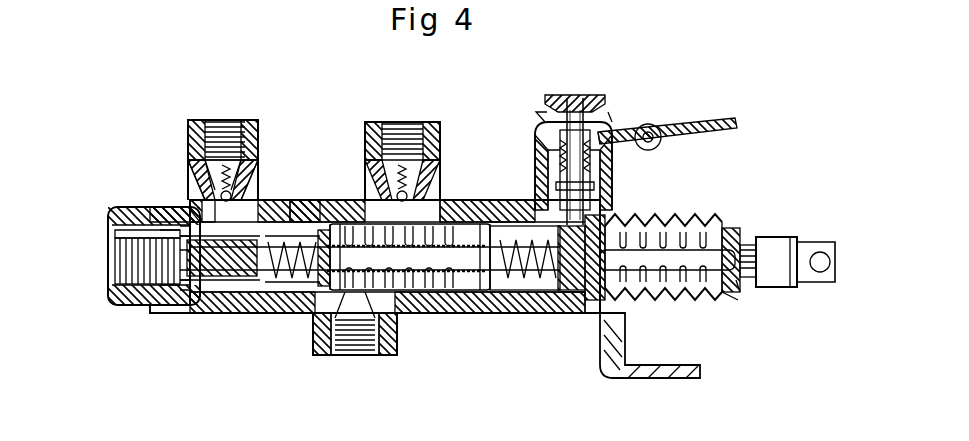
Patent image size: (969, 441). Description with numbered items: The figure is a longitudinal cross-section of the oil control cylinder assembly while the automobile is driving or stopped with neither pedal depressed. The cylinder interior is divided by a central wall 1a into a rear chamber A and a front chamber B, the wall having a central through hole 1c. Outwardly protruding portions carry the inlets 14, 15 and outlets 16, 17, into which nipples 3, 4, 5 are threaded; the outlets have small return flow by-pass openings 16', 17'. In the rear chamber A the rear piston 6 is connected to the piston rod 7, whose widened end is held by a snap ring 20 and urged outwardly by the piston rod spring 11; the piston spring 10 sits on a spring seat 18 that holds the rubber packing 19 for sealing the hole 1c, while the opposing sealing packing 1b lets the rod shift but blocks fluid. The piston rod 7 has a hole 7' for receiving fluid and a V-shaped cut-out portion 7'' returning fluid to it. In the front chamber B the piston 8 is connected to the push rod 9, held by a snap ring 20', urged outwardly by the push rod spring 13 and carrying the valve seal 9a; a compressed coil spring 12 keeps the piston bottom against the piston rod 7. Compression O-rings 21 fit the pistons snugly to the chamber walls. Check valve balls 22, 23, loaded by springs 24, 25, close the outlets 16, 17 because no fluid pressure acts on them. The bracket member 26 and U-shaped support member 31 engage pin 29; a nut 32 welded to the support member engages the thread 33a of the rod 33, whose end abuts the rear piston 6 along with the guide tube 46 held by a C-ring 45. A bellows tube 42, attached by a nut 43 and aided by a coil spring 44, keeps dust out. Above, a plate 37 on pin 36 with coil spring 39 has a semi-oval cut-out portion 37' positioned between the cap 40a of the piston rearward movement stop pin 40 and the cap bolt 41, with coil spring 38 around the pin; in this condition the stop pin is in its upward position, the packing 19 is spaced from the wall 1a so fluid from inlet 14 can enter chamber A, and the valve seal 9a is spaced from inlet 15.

The central wall 1a is at (360, 206).
The sealing packing 1b is at (322, 210).
The central through hole 1c is at (321, 355).
The nipple 3 is at (116, 209).
The nipple 4 is at (372, 128).
The nipple 5 is at (192, 126).
The rear piston 6 is at (556, 312).
The piston rod 7 is at (410, 291).
The hole 7' is at (517, 232).
The V-shaped cut-out portion 7'' is at (309, 298).
The piston 8 is at (296, 302).
The push rod 9 is at (195, 312).
The valve seal 9a is at (118, 240).
The piston spring 10 is at (470, 312).
The piston rod spring 11 is at (520, 300).
The coil spring 12 is at (223, 312).
The push rod spring 13 is at (258, 312).
The inlet 14 is at (363, 356).
The inlet 15 is at (138, 260).
The outlet 16 is at (447, 198).
The return flow by-pass opening 16' is at (298, 175).
The outlet 17 is at (166, 197).
The return flow by-pass opening 17' is at (162, 174).
The spring seat 18 is at (422, 312).
The rubber packing 19 is at (395, 330).
The snap ring 20 is at (484, 304).
The snap ring 20' is at (254, 145).
The compression O-rings 21 is at (302, 216).
The check valve ball 22 is at (378, 198).
The check valve ball 23 is at (200, 182).
The spring 24 is at (428, 182).
The spring 25 is at (190, 148).
The bracket member 26 is at (613, 377).
The pin 29 is at (820, 250).
The U-shaped support member 31 is at (778, 240).
The nut 32 is at (750, 245).
The rod 33 is at (660, 300).
The thread 33a is at (745, 286).
The pin 36 is at (652, 128).
The plate 37 is at (667, 116).
The semi-oval cut-out portion 37' is at (622, 96).
The coil spring 38 is at (545, 152).
The coil spring 39 is at (662, 142).
The piston rearward movement stop pin 40 is at (566, 161).
The cap 40a is at (573, 96).
The cap bolt 41 is at (540, 130).
The bellows tube 42 is at (722, 228).
The nut 43 is at (730, 296).
The coil spring 44 is at (676, 228).
The C-ring 45 is at (605, 216).
The guide tube 46 is at (574, 314).
The rear chamber A is at (496, 216).
The front chamber B is at (185, 312).